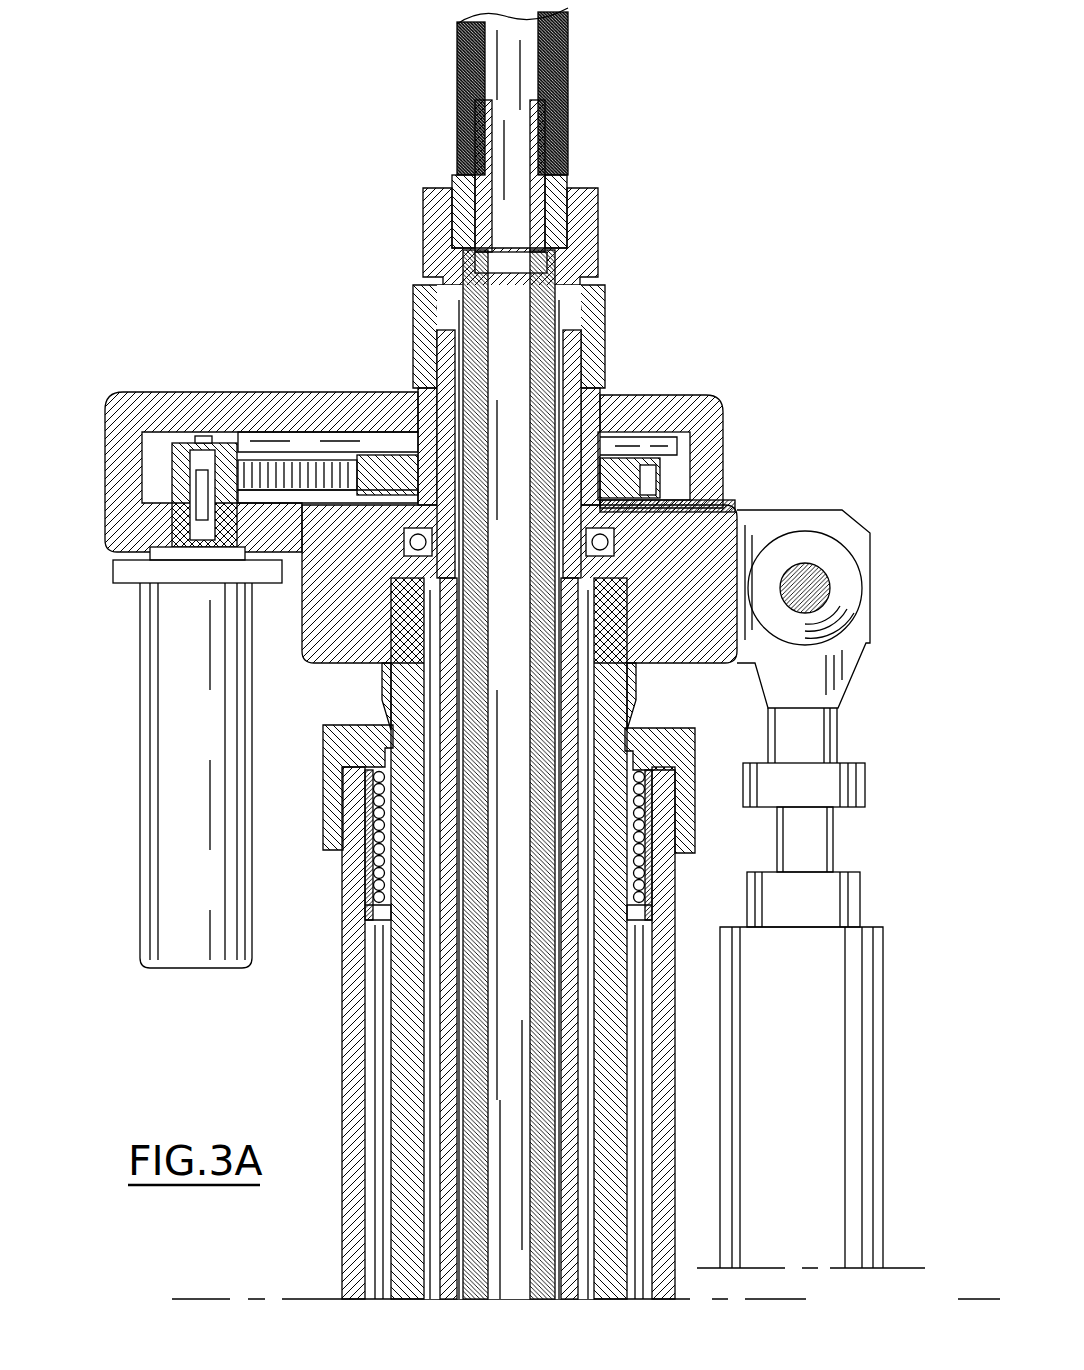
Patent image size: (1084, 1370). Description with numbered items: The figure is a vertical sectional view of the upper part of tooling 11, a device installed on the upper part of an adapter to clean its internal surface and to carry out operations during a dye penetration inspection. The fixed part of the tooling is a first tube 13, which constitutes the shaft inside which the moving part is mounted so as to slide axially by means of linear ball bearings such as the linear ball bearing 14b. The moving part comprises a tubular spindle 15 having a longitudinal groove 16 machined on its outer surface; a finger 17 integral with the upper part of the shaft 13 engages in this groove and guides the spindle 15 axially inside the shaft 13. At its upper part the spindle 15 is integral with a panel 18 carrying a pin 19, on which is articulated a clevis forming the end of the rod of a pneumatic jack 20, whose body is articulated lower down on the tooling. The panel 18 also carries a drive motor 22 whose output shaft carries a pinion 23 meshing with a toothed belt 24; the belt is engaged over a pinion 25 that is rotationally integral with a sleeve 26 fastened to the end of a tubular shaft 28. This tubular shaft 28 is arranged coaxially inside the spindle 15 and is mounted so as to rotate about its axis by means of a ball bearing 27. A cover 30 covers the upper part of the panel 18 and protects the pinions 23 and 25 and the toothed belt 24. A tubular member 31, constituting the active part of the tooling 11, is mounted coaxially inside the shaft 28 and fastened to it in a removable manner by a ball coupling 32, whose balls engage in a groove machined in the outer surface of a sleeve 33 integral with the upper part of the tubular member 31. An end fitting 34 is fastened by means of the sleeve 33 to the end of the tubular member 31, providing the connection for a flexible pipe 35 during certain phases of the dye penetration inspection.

The tooling 11 is at (896, 1128).
The first tube 13 is at (663, 1163).
The linear ball bearing 14b is at (673, 873).
The tubular spindle 15 is at (412, 1173).
The longitudinal groove 16 is at (398, 960).
The finger 17 is at (322, 742).
The panel 18 is at (323, 618).
The pin 19 is at (810, 580).
The pneumatic jack 20 is at (850, 990).
The drive motor 22 is at (168, 765).
The pinion 23 is at (208, 440).
The toothed belt 24 is at (283, 477).
The pinion 25 is at (663, 458).
The sleeve 26 is at (580, 407).
The ball bearing 27 is at (686, 507).
The tubular shaft 28 is at (578, 1035).
The cover 30 is at (113, 398).
The tubular member 31 is at (557, 357).
The ball coupling 32 is at (416, 322).
The sleeve 33 is at (596, 248).
The end fitting 34 is at (553, 192).
The flexible pipe 35 is at (568, 82).